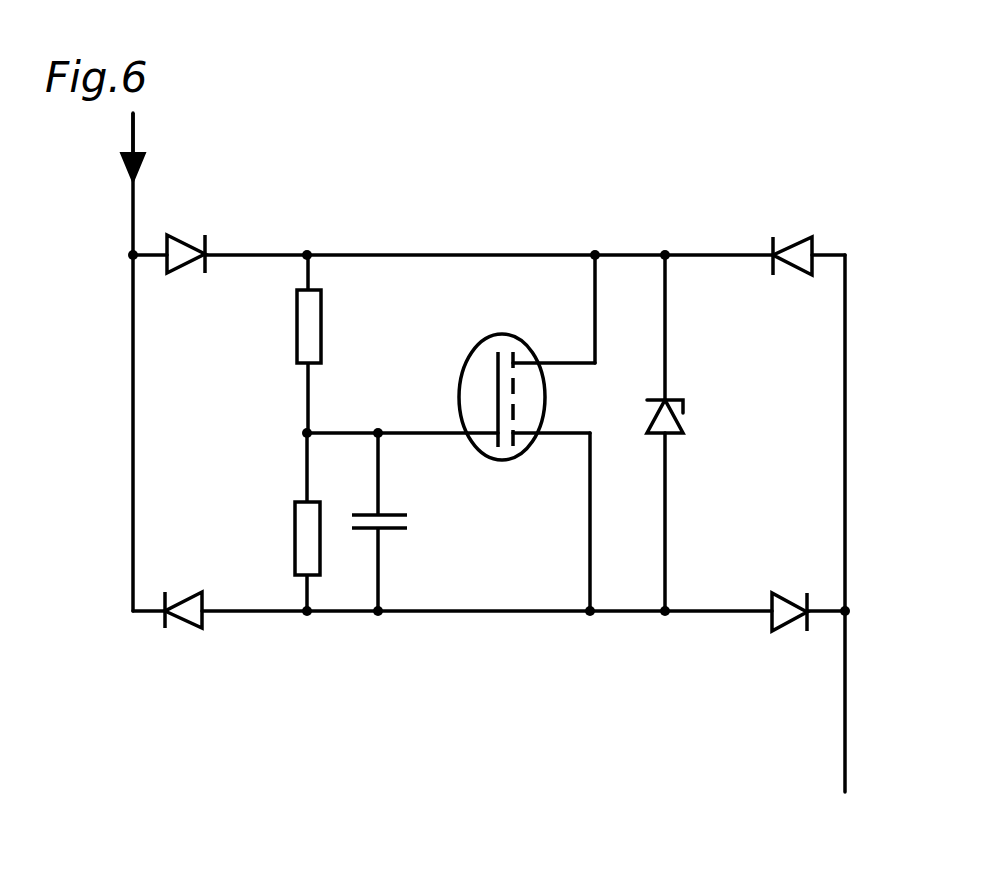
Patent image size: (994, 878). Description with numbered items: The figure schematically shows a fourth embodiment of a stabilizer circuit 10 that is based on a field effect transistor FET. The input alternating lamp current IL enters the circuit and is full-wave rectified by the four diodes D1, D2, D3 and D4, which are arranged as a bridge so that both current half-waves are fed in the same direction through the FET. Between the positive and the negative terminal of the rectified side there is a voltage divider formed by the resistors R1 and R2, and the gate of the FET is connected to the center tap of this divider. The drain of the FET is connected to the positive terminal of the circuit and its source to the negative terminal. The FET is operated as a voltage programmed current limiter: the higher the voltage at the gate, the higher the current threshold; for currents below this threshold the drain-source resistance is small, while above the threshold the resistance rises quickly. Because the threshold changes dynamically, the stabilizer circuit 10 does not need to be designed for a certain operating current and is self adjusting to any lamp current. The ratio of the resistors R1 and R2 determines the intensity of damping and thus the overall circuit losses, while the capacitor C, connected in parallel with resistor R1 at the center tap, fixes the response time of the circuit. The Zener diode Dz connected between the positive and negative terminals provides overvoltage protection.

The stabilizer circuit 10 is at (723, 221).
The input alternating lamp current IL is at (161, 148).
The diode D1 is at (186, 283).
The diode D2 is at (792, 284).
The diode D3 is at (183, 589).
The diode D4 is at (792, 588).
The Zener diode Dz is at (693, 433).
The resistor R1 is at (277, 522).
The resistor R2 is at (280, 344).
The capacitor C is at (392, 522).
The field effect transistor FET is at (464, 397).